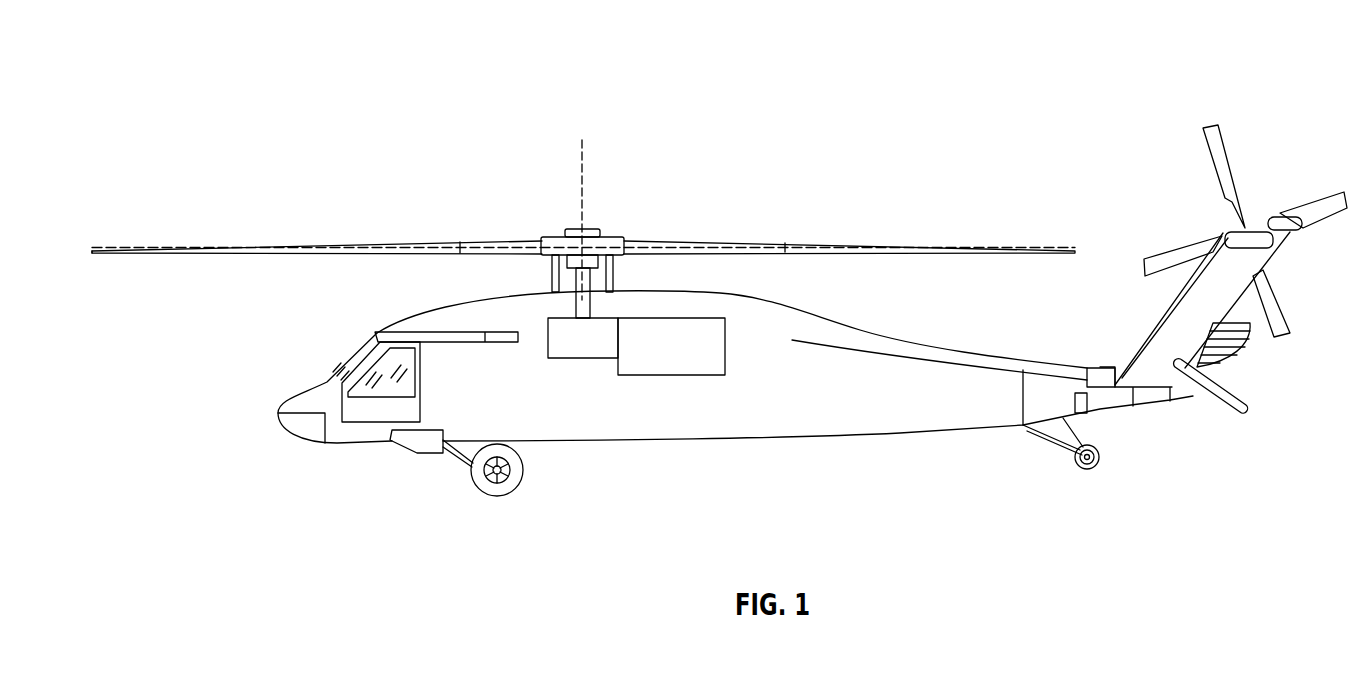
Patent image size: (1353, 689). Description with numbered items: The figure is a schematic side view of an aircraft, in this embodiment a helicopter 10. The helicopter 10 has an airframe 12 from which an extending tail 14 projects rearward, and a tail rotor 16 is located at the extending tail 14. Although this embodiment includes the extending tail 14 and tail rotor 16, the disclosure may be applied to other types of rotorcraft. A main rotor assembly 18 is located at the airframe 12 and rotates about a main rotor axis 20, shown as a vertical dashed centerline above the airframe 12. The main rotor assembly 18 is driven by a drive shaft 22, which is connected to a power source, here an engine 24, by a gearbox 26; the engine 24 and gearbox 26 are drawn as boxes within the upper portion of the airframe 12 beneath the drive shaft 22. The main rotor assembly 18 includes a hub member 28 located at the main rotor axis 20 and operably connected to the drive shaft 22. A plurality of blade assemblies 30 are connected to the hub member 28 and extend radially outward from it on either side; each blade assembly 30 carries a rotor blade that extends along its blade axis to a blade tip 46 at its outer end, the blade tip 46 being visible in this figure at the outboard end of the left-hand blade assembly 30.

The helicopter 10 is at (200, 69).
The airframe 12 is at (370, 437).
The extending tail 14 is at (983, 418).
The tail rotor 16 is at (1277, 308).
The main rotor assembly 18 is at (295, 247).
The main rotor axis 20 is at (589, 290).
The drive shaft 22 is at (576, 308).
The engine 24 is at (684, 365).
The gearbox 26 is at (592, 345).
The hub member 28 is at (548, 238).
The blade assemblies 30 is at (458, 242).
The blade tip 46 is at (92, 251).